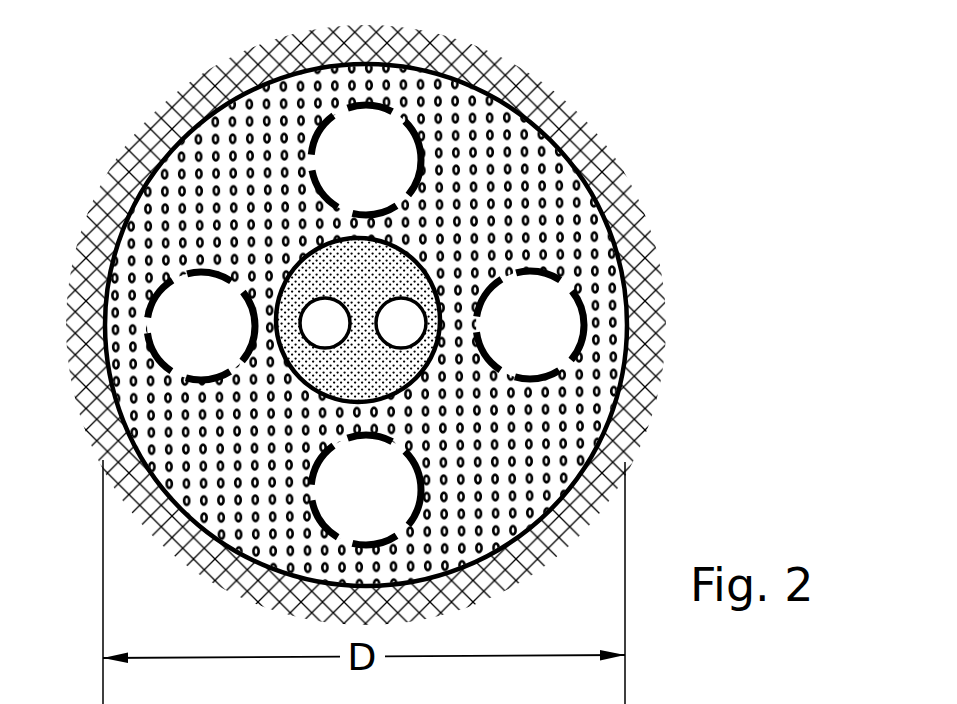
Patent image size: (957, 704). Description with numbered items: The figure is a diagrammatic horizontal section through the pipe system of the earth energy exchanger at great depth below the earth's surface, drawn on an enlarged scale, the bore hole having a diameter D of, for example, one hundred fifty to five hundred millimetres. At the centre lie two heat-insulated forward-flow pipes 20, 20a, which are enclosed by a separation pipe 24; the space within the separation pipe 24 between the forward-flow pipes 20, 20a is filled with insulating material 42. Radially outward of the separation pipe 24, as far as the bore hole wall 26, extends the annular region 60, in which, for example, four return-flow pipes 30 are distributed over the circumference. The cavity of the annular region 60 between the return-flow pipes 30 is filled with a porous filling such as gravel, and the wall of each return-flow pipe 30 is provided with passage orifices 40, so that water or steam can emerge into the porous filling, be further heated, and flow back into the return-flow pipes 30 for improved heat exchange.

The forward-flow pipe 20 is at (332, 322).
The forward-flow pipe 20a is at (430, 272).
The separation pipe 24 is at (298, 265).
The bore hole wall 26 is at (413, 305).
The return-flow pipe 30 is at (207, 328).
The passage orifice 40 is at (563, 273).
The insulating material 42 is at (363, 287).
The annular region 60 is at (251, 189).